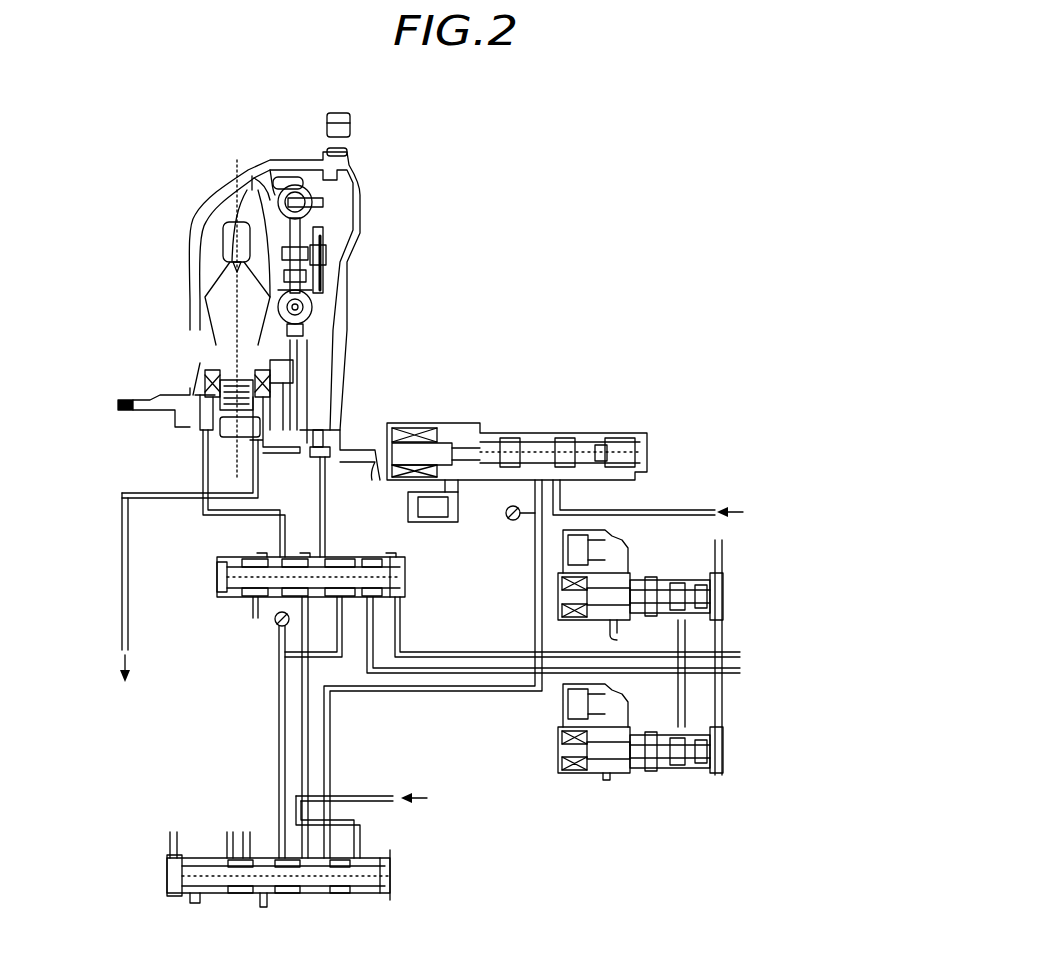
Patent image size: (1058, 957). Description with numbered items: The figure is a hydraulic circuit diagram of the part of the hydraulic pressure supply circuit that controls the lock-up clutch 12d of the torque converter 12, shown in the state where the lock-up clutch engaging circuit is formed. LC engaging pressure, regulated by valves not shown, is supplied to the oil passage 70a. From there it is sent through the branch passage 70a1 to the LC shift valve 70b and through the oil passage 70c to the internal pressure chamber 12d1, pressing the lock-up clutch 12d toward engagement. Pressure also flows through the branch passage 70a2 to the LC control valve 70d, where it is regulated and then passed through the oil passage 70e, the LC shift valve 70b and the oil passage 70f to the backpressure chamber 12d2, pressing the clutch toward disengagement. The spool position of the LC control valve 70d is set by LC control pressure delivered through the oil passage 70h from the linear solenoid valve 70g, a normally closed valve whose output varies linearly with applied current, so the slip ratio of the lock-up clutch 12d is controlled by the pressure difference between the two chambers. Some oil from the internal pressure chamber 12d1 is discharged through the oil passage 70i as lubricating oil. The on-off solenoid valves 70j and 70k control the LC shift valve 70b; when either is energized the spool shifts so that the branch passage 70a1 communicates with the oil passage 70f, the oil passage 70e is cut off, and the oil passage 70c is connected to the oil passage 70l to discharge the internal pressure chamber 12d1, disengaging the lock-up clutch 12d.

The torque converter 12 is at (194, 188).
The lock-up clutch 12d is at (345, 182).
The internal pressure chamber 12d1 is at (262, 190).
The backpressure chamber 12d2 is at (332, 310).
The oil passage 70a is at (360, 795).
The branch passage 70a1 is at (310, 735).
The branch passage 70a2 is at (303, 835).
The LC shift valve 70b is at (250, 558).
The oil passage 70c is at (202, 462).
The LC control valve 70d is at (167, 876).
The oil passage 70e is at (277, 713).
The oil passage 70f is at (327, 503).
The linear solenoid valve 70g is at (632, 438).
The oil passage 70h is at (535, 570).
The oil passage 70i is at (120, 598).
The on-off solenoid valve 70j is at (620, 776).
The on-off solenoid valve 70k is at (685, 578).
The oil passage 70l is at (253, 612).